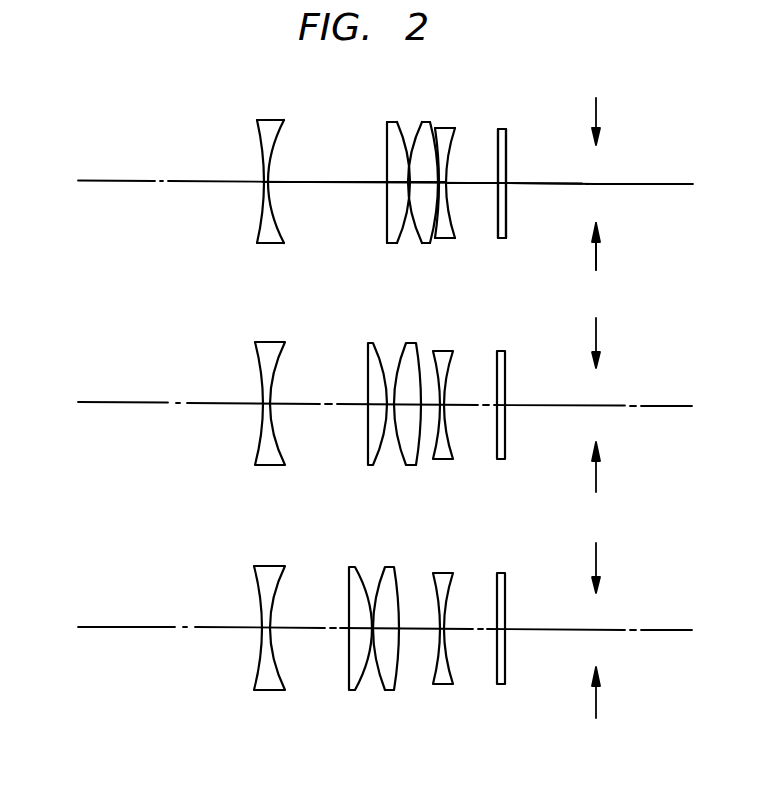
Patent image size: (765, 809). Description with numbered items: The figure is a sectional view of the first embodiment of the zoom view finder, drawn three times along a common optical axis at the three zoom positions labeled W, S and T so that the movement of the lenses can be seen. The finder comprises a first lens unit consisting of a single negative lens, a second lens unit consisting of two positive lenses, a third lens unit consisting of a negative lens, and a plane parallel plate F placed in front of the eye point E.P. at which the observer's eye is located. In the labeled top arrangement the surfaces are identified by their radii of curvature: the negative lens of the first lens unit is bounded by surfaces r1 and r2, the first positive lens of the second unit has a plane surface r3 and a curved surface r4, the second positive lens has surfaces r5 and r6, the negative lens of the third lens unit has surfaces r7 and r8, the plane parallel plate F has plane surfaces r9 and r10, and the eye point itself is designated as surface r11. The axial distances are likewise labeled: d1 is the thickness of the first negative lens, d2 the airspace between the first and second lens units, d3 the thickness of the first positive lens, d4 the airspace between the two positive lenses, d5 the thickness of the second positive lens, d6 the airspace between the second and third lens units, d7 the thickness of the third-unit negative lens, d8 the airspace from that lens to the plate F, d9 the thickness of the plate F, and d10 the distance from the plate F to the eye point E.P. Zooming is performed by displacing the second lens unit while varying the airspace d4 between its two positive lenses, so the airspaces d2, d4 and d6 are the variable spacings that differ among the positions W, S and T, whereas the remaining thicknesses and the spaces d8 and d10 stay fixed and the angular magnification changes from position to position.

The radius of curvature of first surface of first lens unit r1 is at (256, 135).
The radius of curvature of second surface of first lens unit r2 is at (284, 134).
The radius of curvature of first surface of first positive lens r3 is at (387, 138).
The radius of curvature of second surface of first positive lens r4 is at (401, 140).
The radius of curvature of first surface of second positive lens r5 is at (416, 137).
The radius of curvature of second surface of second positive lens r6 is at (428, 124).
The radius of curvature of first surface of third lens unit r7 is at (436, 135).
The radius of curvature of second surface of third lens unit r8 is at (455, 135).
The radius of curvature of first surface of plane parallel plate r9 is at (498, 140).
The radius of curvature of second surface of plane parallel plate r10 is at (506, 140).
The eye point surface r11 is at (596, 110).
The thickness of first lens unit negative lens d1 is at (262, 186).
The variable airspace between first and second lens units d2 is at (326, 184).
The thickness of first positive lens d3 is at (385, 188).
The variable airspace between the two positive lenses d4 is at (406, 178).
The thickness of second positive lens d5 is at (428, 190).
The variable airspace between second and third lens units d6 is at (444, 186).
The thickness of third lens unit negative lens d7 is at (446, 180).
The airspace between third lens unit and plane parallel plate d8 is at (488, 186).
The thickness of plane parallel plate d9 is at (507, 188).
The distance from plane parallel plate to eye point d10 is at (522, 183).
The plane parallel plate F is at (507, 227).
The eye point E.P. is at (597, 252).
The wide-angle position W is at (373, 181).
The standard position S is at (373, 403).
The telephoto position T is at (374, 627).